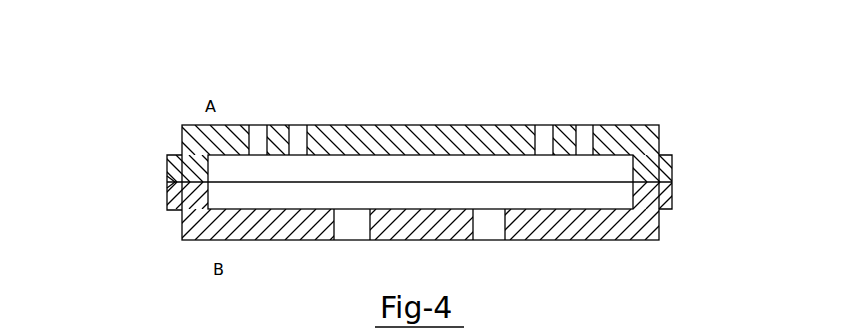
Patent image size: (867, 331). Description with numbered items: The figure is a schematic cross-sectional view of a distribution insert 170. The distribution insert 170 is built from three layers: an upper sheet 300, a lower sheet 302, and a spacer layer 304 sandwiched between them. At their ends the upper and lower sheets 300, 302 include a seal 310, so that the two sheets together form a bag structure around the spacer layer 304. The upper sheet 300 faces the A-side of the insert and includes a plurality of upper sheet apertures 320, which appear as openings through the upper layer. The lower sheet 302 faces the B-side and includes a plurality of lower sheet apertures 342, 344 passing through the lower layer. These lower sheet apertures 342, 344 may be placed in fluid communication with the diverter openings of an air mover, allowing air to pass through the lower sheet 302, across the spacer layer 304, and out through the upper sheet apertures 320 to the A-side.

The distribution insert 170 is at (151, 124).
The upper sheet 300 is at (386, 130).
The lower sheet 302 is at (557, 232).
The spacer layer 304 is at (438, 167).
The seal 310 is at (672, 172).
The upper sheet apertures 320 is at (297, 137).
The lower sheet aperture 342 is at (482, 233).
The lower sheet aperture 344 is at (360, 231).